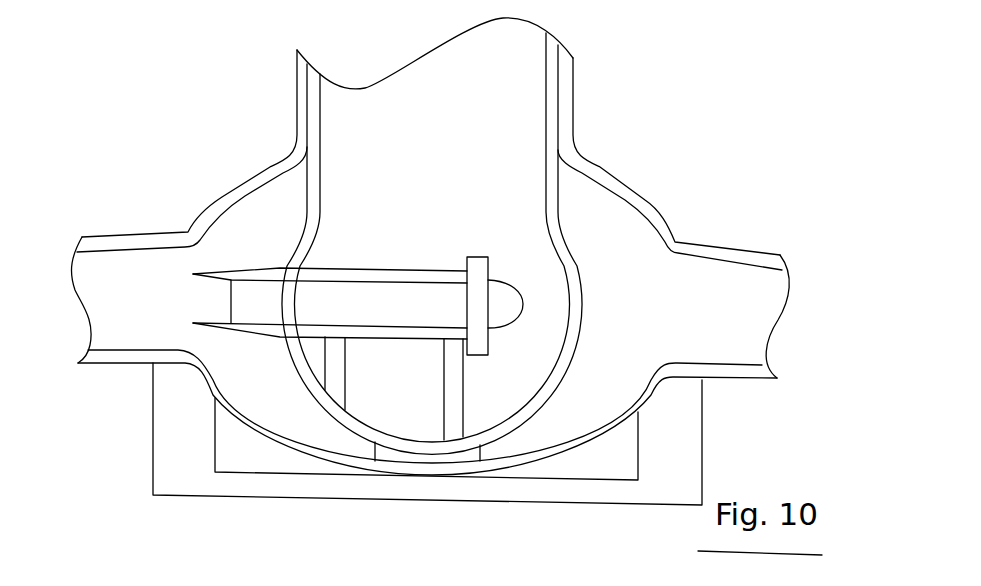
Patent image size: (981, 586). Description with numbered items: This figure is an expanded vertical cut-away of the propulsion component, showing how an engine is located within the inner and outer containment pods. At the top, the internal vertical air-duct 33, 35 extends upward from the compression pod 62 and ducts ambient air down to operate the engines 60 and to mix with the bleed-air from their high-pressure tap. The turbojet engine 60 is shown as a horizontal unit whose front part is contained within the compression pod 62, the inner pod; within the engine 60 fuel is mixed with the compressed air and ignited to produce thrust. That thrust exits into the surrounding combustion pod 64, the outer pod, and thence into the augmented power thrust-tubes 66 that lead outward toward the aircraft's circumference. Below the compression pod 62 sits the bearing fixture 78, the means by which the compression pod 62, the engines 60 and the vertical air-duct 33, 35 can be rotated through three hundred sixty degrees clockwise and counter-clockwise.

The vertical air-duct 33 is at (495, 143).
The vertical air-duct 35 is at (400, 135).
The engine 60 is at (515, 292).
The compression pod 62 is at (568, 230).
The combustion pod 64 is at (242, 180).
The augmented power thrust-tube 66 is at (143, 298).
The bearing fixture 78 is at (383, 457).